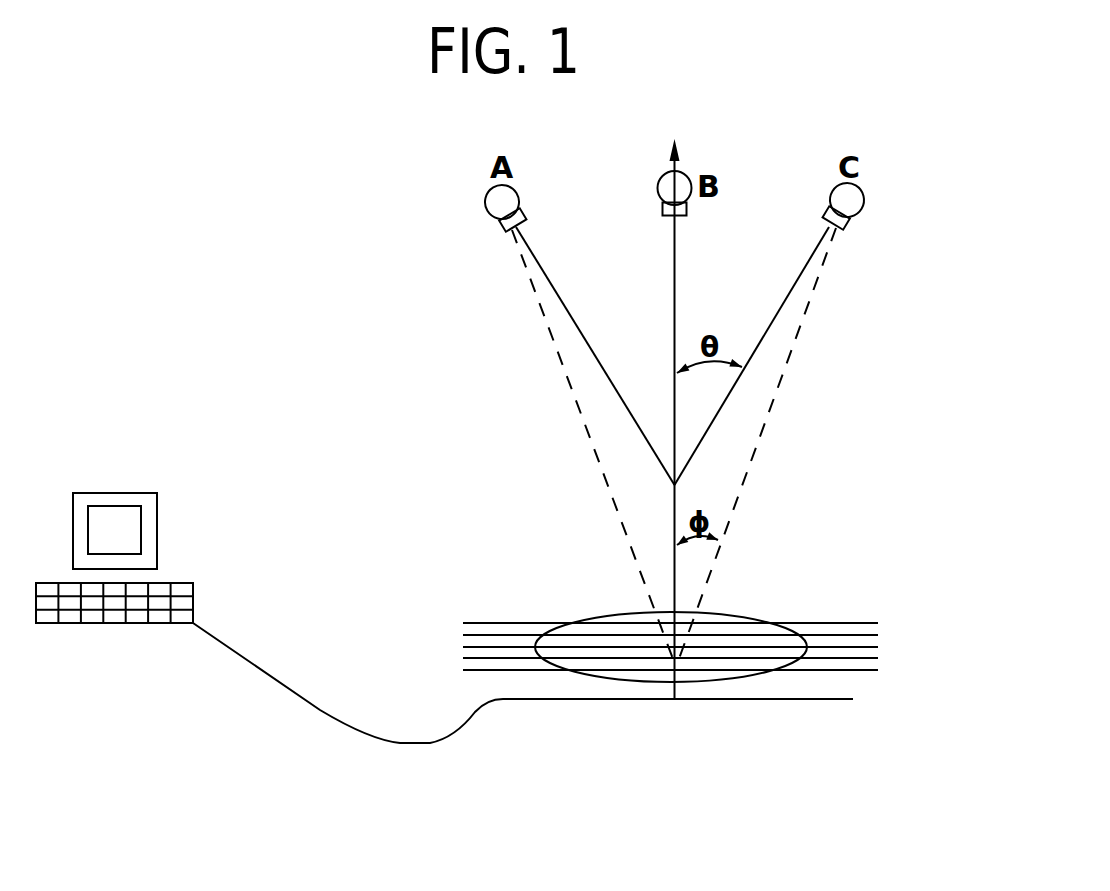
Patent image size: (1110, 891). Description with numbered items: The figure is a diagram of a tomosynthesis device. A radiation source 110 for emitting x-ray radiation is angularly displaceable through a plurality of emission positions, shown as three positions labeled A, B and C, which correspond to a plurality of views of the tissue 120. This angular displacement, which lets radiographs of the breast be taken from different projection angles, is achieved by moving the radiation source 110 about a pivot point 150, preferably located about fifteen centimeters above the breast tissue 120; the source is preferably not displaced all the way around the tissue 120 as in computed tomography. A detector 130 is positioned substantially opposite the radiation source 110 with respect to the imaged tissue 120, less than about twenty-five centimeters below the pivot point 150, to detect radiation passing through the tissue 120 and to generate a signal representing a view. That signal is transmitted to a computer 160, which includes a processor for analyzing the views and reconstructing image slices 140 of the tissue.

The radiation source 110 is at (485, 212).
The tissue 120 is at (733, 617).
The detector 130 is at (548, 701).
The image slices 140 is at (456, 603).
The pivot point 150 is at (665, 492).
The computer 160 is at (160, 545).